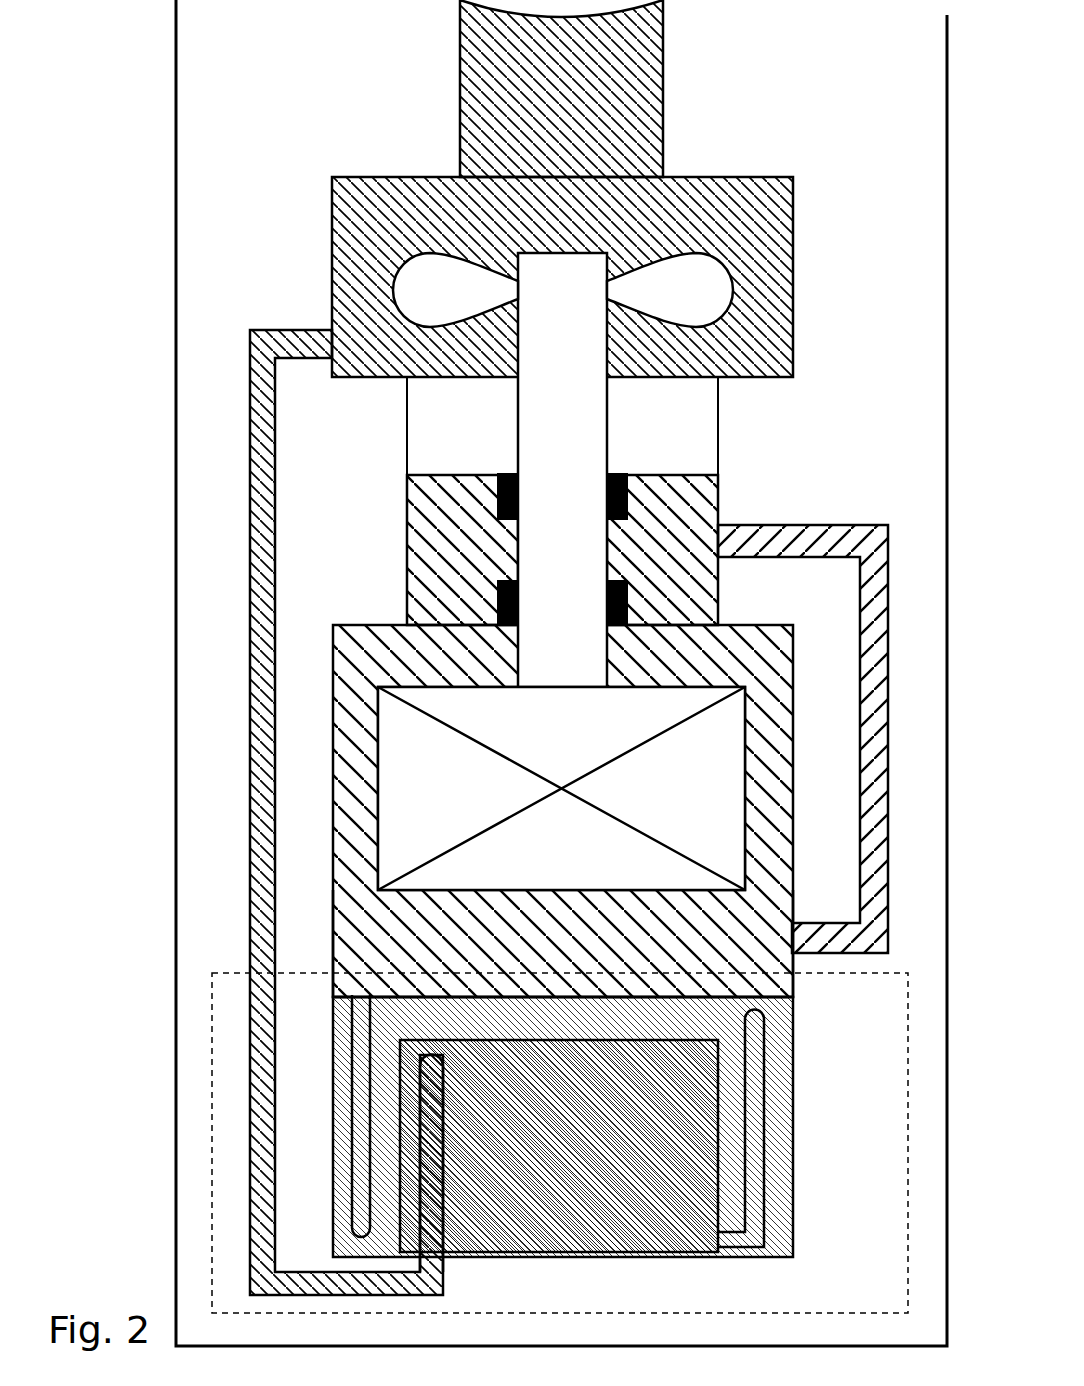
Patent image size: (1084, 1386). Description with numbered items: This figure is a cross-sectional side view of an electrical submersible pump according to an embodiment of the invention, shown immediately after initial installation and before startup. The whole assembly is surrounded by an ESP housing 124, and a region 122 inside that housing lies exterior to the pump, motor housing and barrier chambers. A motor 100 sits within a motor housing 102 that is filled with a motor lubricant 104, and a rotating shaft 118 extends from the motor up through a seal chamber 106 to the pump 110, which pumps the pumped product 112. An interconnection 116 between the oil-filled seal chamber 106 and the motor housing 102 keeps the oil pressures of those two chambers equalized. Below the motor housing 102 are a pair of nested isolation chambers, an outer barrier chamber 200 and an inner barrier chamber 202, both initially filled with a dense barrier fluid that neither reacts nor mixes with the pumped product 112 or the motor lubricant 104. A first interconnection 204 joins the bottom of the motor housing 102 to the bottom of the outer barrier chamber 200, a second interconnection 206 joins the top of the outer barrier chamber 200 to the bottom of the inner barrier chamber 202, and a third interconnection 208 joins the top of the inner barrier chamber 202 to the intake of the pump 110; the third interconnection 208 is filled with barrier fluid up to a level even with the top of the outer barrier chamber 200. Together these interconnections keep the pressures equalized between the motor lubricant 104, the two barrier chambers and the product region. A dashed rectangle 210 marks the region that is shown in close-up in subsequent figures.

The motor 100 is at (561, 788).
The motor housing 102 is at (357, 625).
The motor lubricant 104 is at (563, 943).
The seal chamber 106 is at (562, 501).
The pump 110 is at (332, 198).
The pumped product 112 is at (562, 277).
The interconnection 116 is at (823, 525).
The rotating shaft 118 is at (561, 343).
The region within the ESP housing 122 is at (854, 92).
The ESP housing 124 is at (177, 66).
The outer barrier chamber 200 is at (563, 1127).
The inner barrier chamber 202 is at (559, 1146).
The first interconnection 204 is at (372, 1018).
The second interconnection 206 is at (742, 1013).
The third interconnection 208 is at (275, 1058).
The dashed rectangle 210 is at (222, 973).